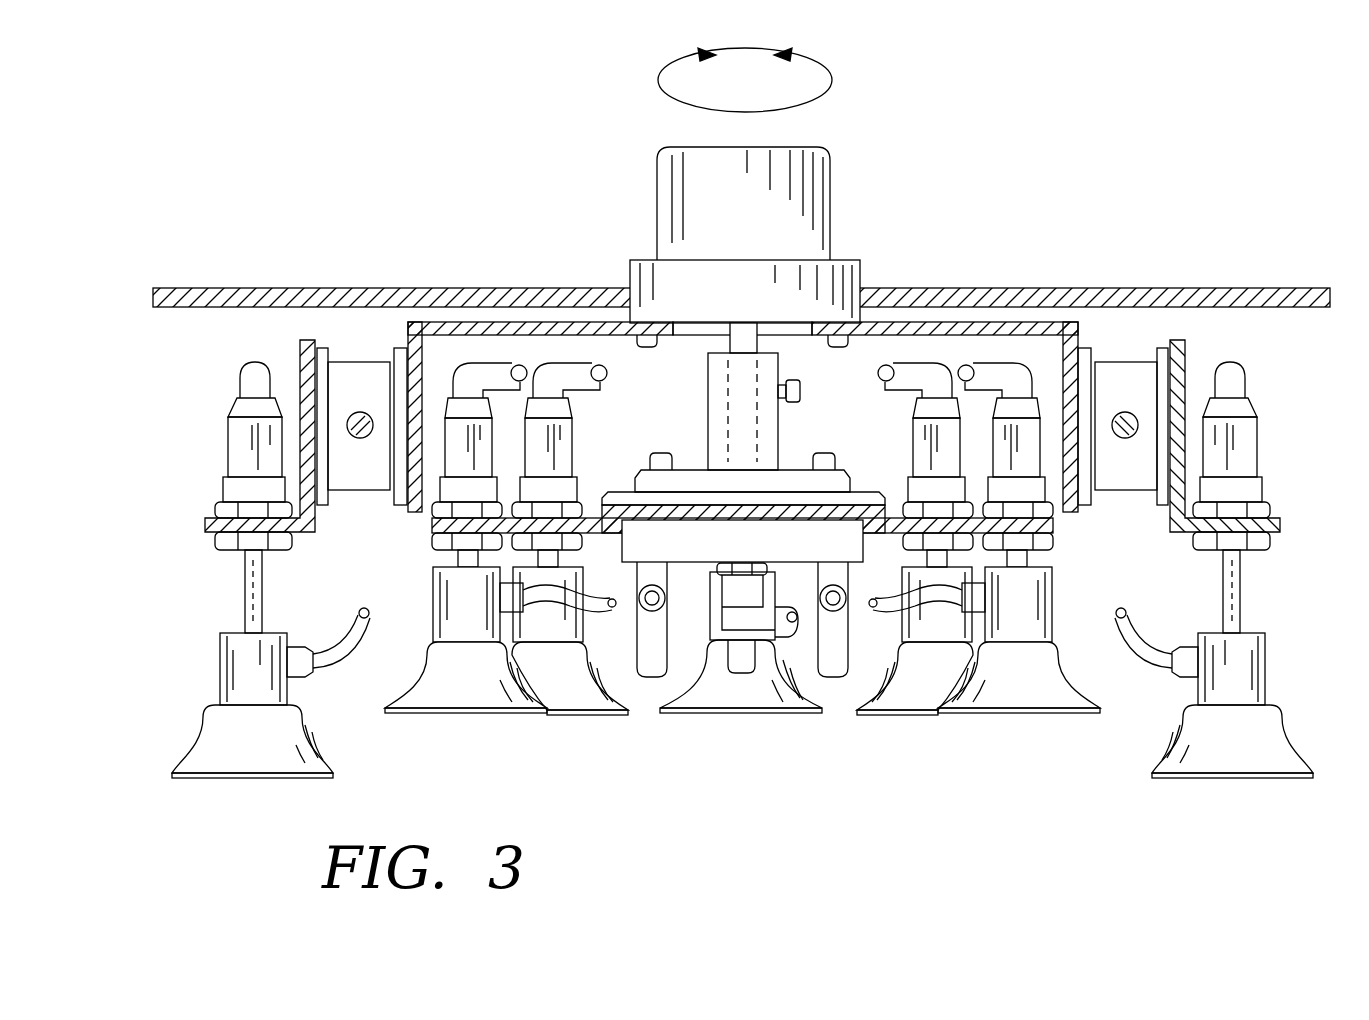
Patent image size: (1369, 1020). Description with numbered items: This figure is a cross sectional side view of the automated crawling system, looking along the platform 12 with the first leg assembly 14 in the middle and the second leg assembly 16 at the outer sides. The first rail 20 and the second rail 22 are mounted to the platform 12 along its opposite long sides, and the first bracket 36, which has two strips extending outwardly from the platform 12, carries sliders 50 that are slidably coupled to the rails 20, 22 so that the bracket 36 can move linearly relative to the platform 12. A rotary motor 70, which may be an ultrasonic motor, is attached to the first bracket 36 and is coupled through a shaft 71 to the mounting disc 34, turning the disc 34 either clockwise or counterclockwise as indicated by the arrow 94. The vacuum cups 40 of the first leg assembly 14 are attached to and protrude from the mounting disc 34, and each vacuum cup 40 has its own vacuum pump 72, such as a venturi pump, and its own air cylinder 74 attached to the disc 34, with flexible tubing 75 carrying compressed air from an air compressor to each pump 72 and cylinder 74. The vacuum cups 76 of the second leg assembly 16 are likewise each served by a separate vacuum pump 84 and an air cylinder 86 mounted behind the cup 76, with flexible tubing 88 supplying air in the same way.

The platform 12 is at (1306, 287).
The first leg assembly 14 is at (717, 733).
The second leg assembly 16 is at (213, 572).
The first rail 20 is at (362, 437).
The second rail 22 is at (1125, 440).
The mounting disc 34 is at (1053, 522).
The first bracket 36 is at (1048, 322).
The vacuum cup 40 is at (1055, 698).
The slider 50 is at (357, 377).
The rotary motor 70 is at (800, 152).
The shaft 71 is at (737, 342).
The vacuum pump 72 is at (503, 597).
The air cylinder 74 is at (535, 432).
The flexible tubing 75 is at (597, 612).
The vacuum cup 76 is at (205, 757).
The vacuum pump 84 is at (298, 673).
The air cylinder 86 is at (245, 447).
The flexible tubing 88 is at (350, 640).
The arrow 94 is at (815, 75).